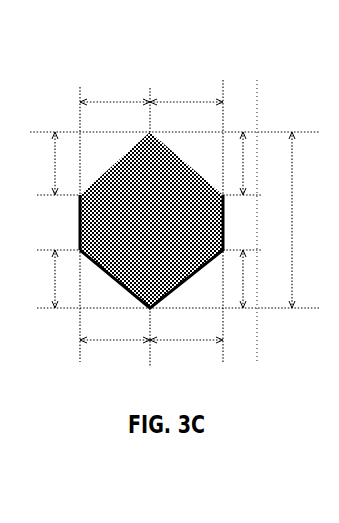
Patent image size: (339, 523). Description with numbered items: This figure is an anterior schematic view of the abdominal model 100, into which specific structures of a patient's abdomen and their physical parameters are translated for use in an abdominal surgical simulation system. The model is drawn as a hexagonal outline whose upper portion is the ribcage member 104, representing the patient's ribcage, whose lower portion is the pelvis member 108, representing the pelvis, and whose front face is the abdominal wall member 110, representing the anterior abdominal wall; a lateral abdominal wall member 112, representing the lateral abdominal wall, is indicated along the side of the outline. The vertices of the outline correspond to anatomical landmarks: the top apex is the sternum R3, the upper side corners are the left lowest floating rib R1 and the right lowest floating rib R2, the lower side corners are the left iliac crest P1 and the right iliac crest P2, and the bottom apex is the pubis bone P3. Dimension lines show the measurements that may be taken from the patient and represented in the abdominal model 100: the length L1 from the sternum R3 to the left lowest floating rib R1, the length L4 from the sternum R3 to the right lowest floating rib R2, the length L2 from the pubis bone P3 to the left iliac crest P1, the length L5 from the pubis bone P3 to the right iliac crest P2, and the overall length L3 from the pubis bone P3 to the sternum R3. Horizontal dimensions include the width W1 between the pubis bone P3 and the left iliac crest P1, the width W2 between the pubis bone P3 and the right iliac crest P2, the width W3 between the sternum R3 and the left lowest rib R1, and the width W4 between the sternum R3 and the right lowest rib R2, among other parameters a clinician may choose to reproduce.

The abdominal model 100 is at (52, 106).
The ribcage member 104 is at (115, 191).
The abdominal wall member 110 is at (186, 191).
The pelvis member 108 is at (151, 264).
The lateral abdominal wall member 112 is at (78, 220).
The left lowest floating rib R1 is at (227, 200).
The right lowest floating rib R2 is at (77, 200).
The sternum R3 is at (153, 130).
The left iliac crest P1 is at (226, 249).
The right iliac crest P2 is at (78, 248).
The pubis bone P3 is at (154, 311).
The width between pubis bone and left iliac crest W1 is at (186, 351).
The width between pubis bone and right iliac crest W2 is at (115, 351).
The width between sternum and left lowest rib W3 is at (186, 96).
The width between sternum and right lowest rib W4 is at (115, 96).
The length from sternum to left lowest floating rib L1 is at (253, 163).
The length from pubis bone to left iliac crest L2 is at (253, 279).
The length from pubis bone to sternum L3 is at (302, 220).
The length from sternum to right lowest floating rib L4 is at (43, 163).
The length from pubis bone to right iliac crest L5 is at (43, 279).